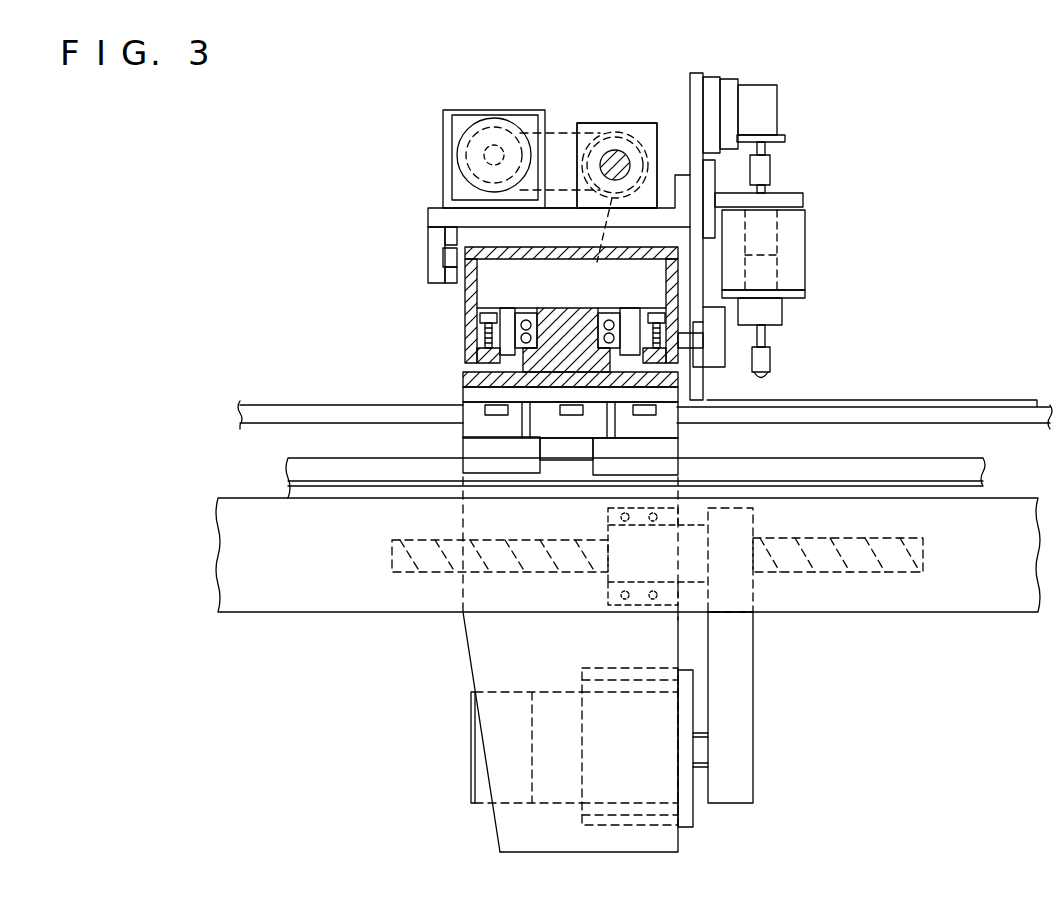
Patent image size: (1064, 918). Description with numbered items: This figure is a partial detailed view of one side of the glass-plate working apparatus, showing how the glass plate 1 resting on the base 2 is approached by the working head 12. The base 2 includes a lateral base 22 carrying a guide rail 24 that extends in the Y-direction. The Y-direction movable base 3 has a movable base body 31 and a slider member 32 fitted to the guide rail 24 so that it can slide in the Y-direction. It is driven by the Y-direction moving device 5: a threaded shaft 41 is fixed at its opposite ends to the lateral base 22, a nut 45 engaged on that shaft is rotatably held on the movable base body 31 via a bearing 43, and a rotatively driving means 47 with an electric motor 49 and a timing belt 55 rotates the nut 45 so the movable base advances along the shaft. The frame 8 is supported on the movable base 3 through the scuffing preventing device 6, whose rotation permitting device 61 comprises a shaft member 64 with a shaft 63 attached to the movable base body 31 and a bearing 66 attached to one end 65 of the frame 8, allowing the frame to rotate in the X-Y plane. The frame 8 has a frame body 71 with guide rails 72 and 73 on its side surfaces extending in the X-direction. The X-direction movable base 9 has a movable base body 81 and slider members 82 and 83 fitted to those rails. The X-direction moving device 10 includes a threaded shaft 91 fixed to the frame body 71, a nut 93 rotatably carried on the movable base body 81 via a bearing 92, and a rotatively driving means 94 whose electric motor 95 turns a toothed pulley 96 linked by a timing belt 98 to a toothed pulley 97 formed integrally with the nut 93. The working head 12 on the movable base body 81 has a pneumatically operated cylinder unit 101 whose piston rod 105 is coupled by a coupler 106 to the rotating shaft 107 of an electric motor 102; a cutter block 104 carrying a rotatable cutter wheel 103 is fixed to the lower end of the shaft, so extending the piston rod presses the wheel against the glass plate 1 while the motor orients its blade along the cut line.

The glass plate 1 is at (962, 398).
The base 2 is at (285, 405).
The Y-direction movable base 3 is at (460, 662).
The Y-direction moving device 5 is at (757, 745).
The scuffing preventing device 6 is at (478, 357).
The frame 8 is at (463, 298).
The X-direction movable base 9 is at (429, 206).
The X-direction moving device 10 is at (608, 122).
The working head 12 is at (806, 252).
The lateral base 22 is at (293, 600).
The guide rail 24 is at (858, 472).
The movable base body 31 is at (515, 823).
The slider member 32 is at (672, 453).
The threaded shaft 41 is at (877, 580).
The bearing 43 is at (612, 585).
The nut 45 is at (693, 570).
The rotatively driving means 47 is at (467, 788).
The electric motor 49 is at (690, 815).
The timing belt 55 is at (742, 703).
The rotation permitting device 61 is at (598, 305).
The shaft 63 is at (555, 327).
The shaft member 64 is at (562, 378).
The one end of the frame 65 is at (525, 247).
The bearing 66 is at (478, 312).
The frame body 71 is at (658, 238).
The guide rail 72 is at (443, 258).
The guide rail 73 is at (697, 348).
The movable base body 81 is at (558, 217).
The slider member 82 is at (445, 244).
The slider member 83 is at (713, 357).
The threaded shaft 91 is at (617, 152).
The bearing 92 is at (655, 125).
The nut 93 is at (599, 125).
The rotatively driving means 94 is at (497, 108).
The electric motor 95 is at (460, 112).
The toothed pulley 96 is at (485, 133).
The toothed pulley 97 is at (599, 246).
The timing belt 98 is at (568, 127).
The cylinder unit 101 is at (770, 112).
The electric motor 102 is at (790, 225).
The cutter wheel 103 is at (766, 374).
The cutter block 104 is at (770, 362).
The piston rod 105 is at (766, 150).
The coupler 106 is at (771, 172).
The rotating shaft 107 is at (765, 340).